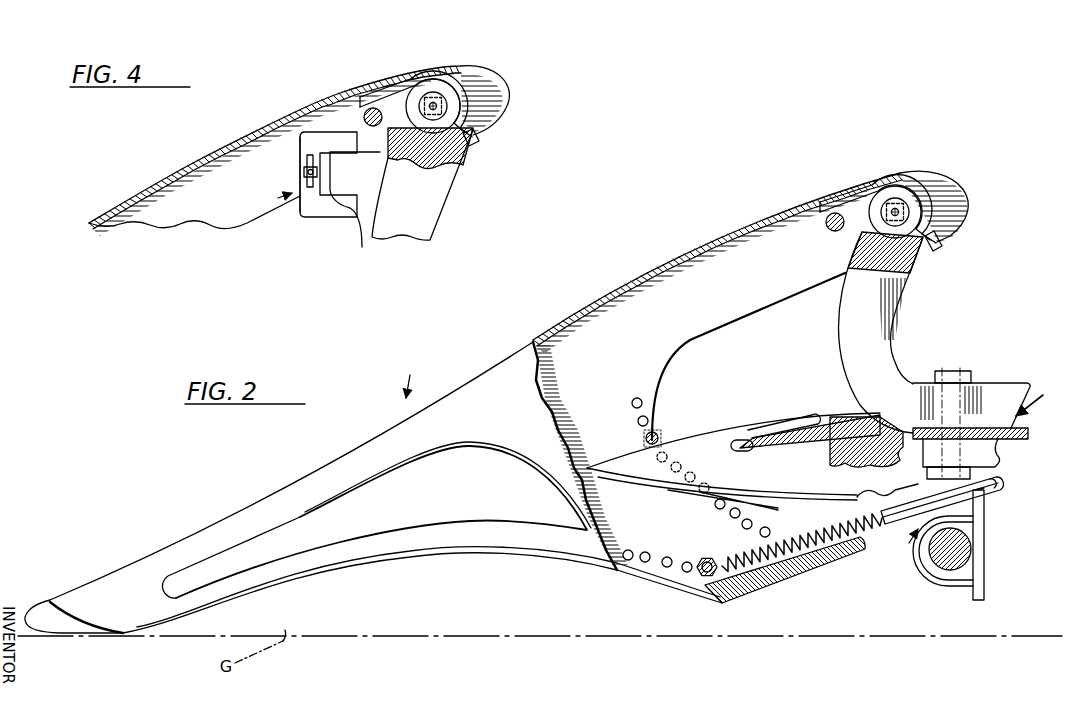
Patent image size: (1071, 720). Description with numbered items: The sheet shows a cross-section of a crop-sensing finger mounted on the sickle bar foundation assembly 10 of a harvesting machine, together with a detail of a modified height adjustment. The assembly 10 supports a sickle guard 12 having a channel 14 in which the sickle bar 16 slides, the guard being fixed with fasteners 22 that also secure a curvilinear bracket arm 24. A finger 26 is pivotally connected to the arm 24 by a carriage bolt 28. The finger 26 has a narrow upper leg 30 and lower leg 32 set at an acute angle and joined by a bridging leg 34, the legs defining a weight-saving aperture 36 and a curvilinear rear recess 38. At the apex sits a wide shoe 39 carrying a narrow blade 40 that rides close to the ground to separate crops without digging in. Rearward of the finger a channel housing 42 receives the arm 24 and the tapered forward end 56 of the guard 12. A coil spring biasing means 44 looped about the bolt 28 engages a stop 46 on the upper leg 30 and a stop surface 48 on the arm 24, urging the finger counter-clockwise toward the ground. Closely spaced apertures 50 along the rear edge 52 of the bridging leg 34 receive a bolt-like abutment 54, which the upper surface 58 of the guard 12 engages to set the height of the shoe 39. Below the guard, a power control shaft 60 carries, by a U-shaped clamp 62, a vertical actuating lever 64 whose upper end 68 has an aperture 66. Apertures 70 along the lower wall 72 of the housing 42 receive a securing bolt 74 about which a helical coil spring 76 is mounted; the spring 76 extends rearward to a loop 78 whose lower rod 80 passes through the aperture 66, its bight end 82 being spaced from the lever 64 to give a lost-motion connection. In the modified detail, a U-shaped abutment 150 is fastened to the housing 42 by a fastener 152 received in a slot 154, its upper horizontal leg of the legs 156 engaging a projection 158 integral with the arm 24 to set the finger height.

In FIG. 2, the sickle bar foundation assembly 10 is at (1042, 399).
In FIG. 2, the sickle guard 12 is at (1004, 458).
In FIG. 2, the channel 14 is at (742, 445).
In FIG. 2, the sickle bar 16 is at (790, 427).
In FIG. 2, the fasteners 22 is at (960, 372).
In FIG. 4, the bracket arm 24 is at (433, 198).
In FIG. 2, the bracket arm 24 is at (898, 322).
In FIG. 2, the finger 26 is at (410, 375).
In FIG. 4, the carriage bolt 28 is at (437, 90).
In FIG. 2, the carriage bolt 28 is at (895, 195).
In FIG. 2, the upper leg 30 is at (322, 470).
In FIG. 2, the lower leg 32 is at (422, 547).
In FIG. 2, the bridging leg 34 is at (518, 460).
In FIG. 2, the aperture 36 is at (306, 524).
In FIG. 2, the recess 38 is at (748, 318).
In FIG. 2, the shoe 39 is at (82, 592).
In FIG. 2, the blade 40 is at (43, 615).
In FIG. 4, the channel housing 42 is at (235, 147).
In FIG. 2, the channel housing 42 is at (632, 295).
In FIG. 4, the biasing means 44 is at (360, 97).
In FIG. 2, the biasing means 44 is at (855, 200).
In FIG. 4, the stop 46 is at (376, 108).
In FIG. 2, the stop 46 is at (832, 232).
In FIG. 4, the stop surface 48 is at (466, 142).
In FIG. 2, the stop surface 48 is at (937, 238).
In FIG. 2, the apertures 50 is at (767, 531).
In FIG. 2, the rear edge 52 is at (705, 479).
In FIG. 2, the abutment 54 is at (657, 435).
In FIG. 2, the forward end 56 is at (645, 482).
In FIG. 2, the upper surface 58 is at (606, 465).
In FIG. 2, the power control shaft 60 is at (952, 565).
In FIG. 2, the U-shaped clamp 62 is at (925, 565).
In FIG. 2, the actuating lever 64 is at (984, 548).
In FIG. 2, the aperture 66 is at (986, 492).
In FIG. 2, the upper end 68 is at (965, 497).
In FIG. 2, the apertures 70 is at (689, 562).
In FIG. 2, the lower wall 72 is at (797, 575).
In FIG. 2, the securing bolt 74 is at (701, 577).
In FIG. 2, the helical coil spring 76 is at (748, 572).
In FIG. 2, the loop 78 is at (900, 543).
In FIG. 2, the lower rod 80 is at (962, 500).
In FIG. 2, the bight end 82 is at (1003, 483).
In FIG. 4, the U-shaped abutment 150 is at (266, 203).
In FIG. 4, the fastener 152 is at (303, 172).
In FIG. 4, the slot 154 is at (307, 150).
In FIG. 4, the legs 156 is at (317, 137).
In FIG. 4, the projection 158 is at (362, 247).